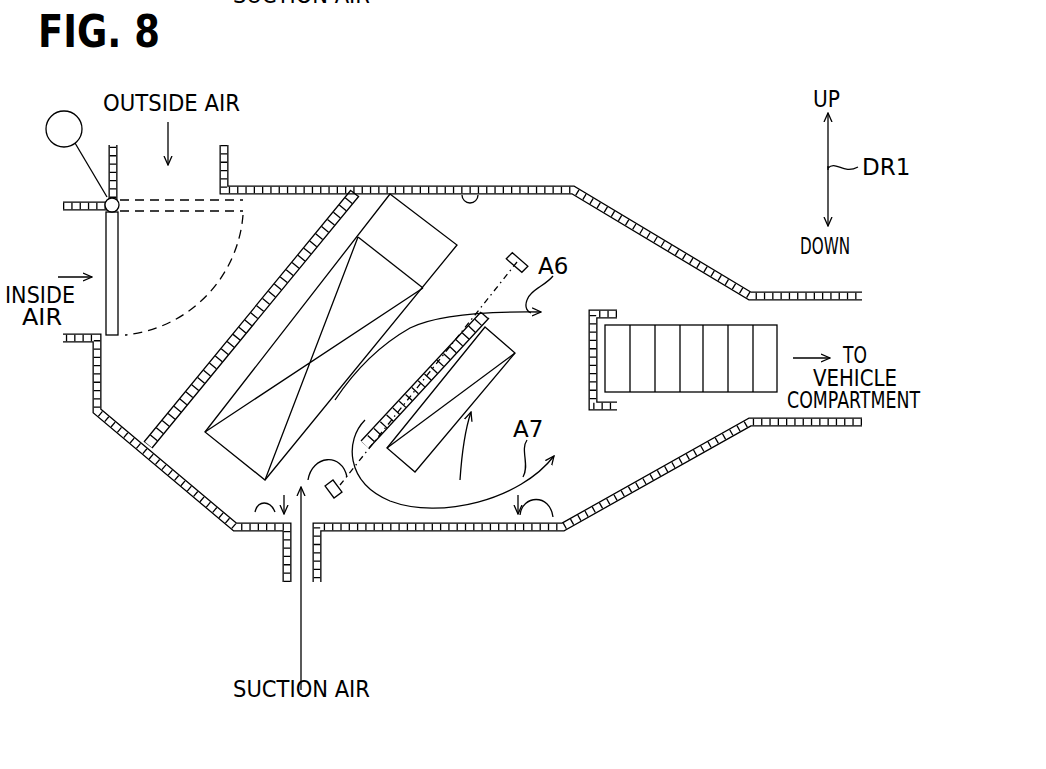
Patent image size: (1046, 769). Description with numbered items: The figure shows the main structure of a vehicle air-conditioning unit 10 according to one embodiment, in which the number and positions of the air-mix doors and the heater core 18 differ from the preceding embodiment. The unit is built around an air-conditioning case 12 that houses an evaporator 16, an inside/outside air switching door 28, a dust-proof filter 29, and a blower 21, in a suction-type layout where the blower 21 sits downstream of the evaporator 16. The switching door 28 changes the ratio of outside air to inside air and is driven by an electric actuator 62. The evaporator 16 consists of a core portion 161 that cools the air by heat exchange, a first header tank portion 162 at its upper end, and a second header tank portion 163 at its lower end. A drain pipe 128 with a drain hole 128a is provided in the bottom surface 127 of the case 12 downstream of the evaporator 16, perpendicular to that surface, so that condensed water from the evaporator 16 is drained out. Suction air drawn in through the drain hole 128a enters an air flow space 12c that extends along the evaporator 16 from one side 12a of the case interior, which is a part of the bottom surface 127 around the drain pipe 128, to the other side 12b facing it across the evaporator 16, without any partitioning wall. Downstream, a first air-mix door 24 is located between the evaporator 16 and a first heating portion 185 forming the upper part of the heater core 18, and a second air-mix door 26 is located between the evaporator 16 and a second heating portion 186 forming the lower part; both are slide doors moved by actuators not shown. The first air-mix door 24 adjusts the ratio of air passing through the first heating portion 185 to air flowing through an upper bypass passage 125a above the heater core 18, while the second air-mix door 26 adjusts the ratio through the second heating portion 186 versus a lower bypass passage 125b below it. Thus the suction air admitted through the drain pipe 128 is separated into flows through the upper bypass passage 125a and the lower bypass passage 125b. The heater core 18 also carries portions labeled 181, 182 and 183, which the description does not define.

The vehicle air-conditioning unit 10 is at (604, 100).
The air-conditioning case 12 is at (453, 186).
The one side of the inner part of the air-conditioning case 12a is at (275, 520).
The other side of the inner part of the air-conditioning case 12b is at (485, 190).
The air flow space 12c is at (362, 390).
The evaporator 16 is at (334, 256).
The core portion 161 is at (415, 308).
The first header tank portion 162 is at (405, 215).
The second header tank portion 163 is at (192, 470).
The heater core 18 is at (494, 467).
The heater core portion 181 is at (466, 458).
The heater core portion 182 is at (590, 460).
The heater core portion 183 is at (363, 458).
The first heating portion 185 is at (513, 450).
The second heating portion 186 is at (475, 445).
The blower 21 is at (687, 333).
The first air-mix door 24 is at (440, 318).
The second air-mix door 26 is at (358, 435).
The inside/outside air switching door 28 is at (100, 235).
The dust-proof filter 29 is at (313, 243).
The electric actuator 62 is at (60, 112).
The upper bypass passage 125a is at (548, 232).
The lower bypass passage 125b is at (403, 511).
The bottom surface 127 is at (265, 500).
The drain pipe 128 is at (284, 580).
The drain hole 128a is at (297, 567).